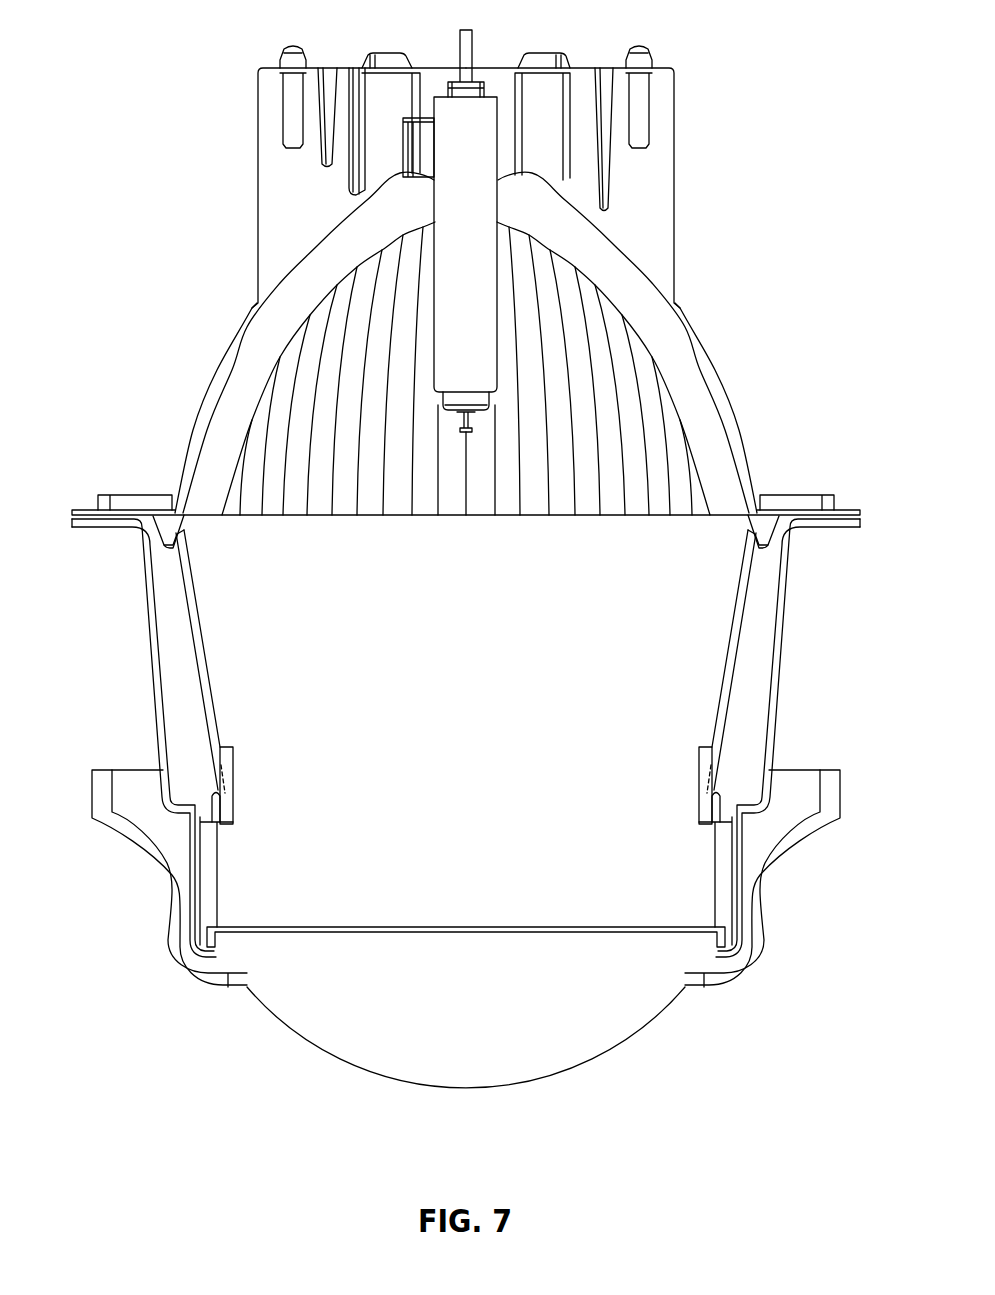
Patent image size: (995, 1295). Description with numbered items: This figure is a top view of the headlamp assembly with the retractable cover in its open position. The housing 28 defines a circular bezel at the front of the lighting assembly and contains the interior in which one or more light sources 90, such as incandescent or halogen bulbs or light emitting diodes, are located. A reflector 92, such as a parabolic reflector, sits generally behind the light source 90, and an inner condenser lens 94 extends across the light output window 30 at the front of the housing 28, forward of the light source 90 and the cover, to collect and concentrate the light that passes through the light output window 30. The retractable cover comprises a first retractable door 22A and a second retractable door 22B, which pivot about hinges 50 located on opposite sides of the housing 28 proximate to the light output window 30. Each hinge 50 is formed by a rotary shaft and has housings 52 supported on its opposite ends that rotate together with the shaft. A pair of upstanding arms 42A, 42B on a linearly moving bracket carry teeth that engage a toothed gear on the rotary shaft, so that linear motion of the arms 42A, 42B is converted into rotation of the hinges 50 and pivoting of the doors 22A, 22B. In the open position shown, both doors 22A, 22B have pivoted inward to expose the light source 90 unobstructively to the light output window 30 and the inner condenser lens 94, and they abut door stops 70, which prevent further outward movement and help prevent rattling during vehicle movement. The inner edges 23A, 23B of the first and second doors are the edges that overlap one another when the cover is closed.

The reflector 92 is at (664, 384).
The light source 90 is at (465, 430).
The door stop 70 is at (168, 528).
The inner edge 23A is at (183, 531).
The inner edge 23B is at (749, 531).
The first retractable door 22A is at (197, 668).
The second retractable door 22B is at (735, 668).
The hinge 50 is at (213, 790).
The first upstanding arm 42A is at (234, 791).
The second upstanding arm 42B is at (693, 809).
The hinge housing 52 is at (210, 812).
The housing 28 is at (118, 836).
The light output window 30 is at (486, 880).
The inner condenser lens 94 is at (316, 1045).